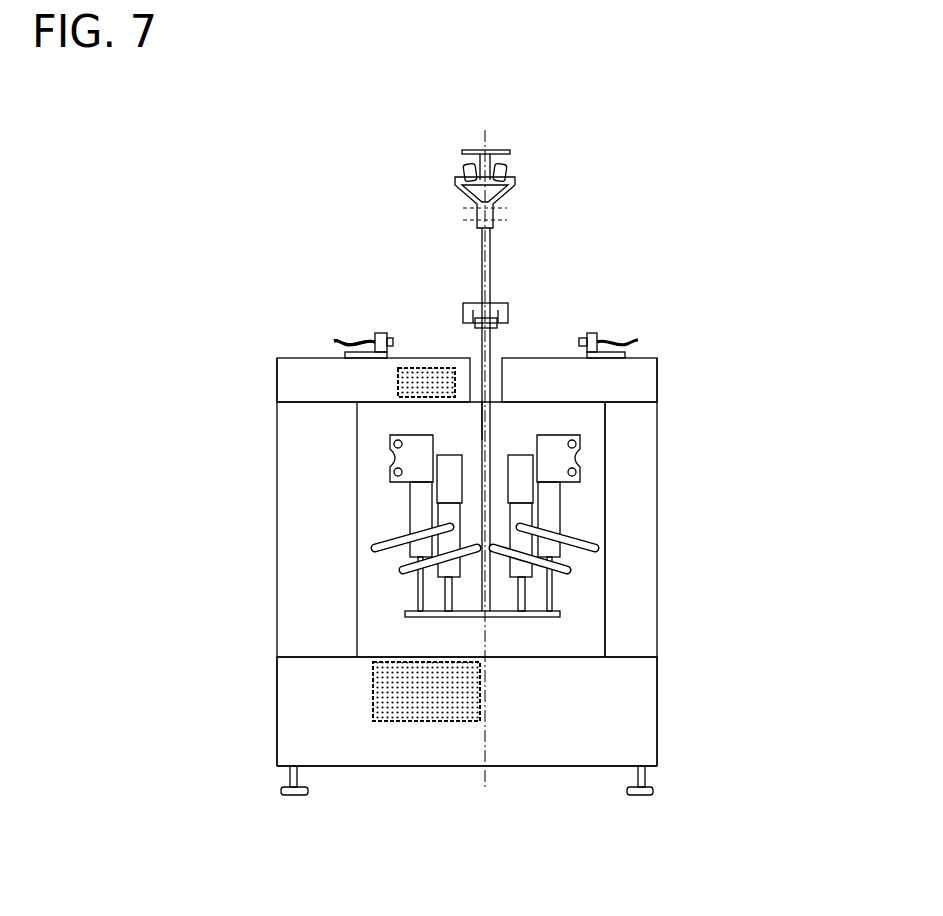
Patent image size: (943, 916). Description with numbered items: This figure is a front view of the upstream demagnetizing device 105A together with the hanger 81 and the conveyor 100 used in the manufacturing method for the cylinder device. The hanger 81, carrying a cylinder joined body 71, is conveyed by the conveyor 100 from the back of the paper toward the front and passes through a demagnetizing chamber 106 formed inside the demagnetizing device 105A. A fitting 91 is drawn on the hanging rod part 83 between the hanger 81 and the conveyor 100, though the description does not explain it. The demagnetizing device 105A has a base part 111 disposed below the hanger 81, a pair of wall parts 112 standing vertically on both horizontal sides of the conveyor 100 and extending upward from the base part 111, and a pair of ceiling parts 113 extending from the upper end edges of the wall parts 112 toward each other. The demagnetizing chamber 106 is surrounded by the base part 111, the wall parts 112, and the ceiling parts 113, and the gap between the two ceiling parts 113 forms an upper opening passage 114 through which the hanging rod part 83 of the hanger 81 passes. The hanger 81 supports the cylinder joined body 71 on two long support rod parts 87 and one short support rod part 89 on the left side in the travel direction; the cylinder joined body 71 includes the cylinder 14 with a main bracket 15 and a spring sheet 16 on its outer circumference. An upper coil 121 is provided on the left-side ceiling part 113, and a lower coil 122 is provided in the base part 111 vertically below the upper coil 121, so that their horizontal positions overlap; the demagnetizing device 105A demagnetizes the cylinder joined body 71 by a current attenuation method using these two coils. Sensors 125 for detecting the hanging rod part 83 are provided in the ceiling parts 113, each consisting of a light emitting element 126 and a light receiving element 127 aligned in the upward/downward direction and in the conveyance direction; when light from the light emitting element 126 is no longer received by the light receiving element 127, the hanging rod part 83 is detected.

The conveyor 100 is at (507, 152).
The demagnetizing device 105A is at (722, 247).
The ceiling parts 113 is at (433, 358).
The clamp 91 is at (480, 318).
The light receiving element 127 is at (380, 333).
The light emitting element 126 is at (592, 333).
The sensor 125 is at (356, 331).
The upper coil 121 is at (398, 383).
The lower coil 122 is at (373, 690).
The upper opening passage 114 is at (493, 386).
The demagnetizing chamber 106 is at (588, 431).
The hanging rod part 83 is at (480, 418).
The main bracket 15 is at (566, 456).
The cylinder joined body 71 is at (413, 501).
The cylinder 14 is at (556, 508).
The spring sheet 16 is at (584, 541).
The wall parts 112 is at (297, 567).
The long support rod parts 87 is at (417, 585).
The short support rod parts 89 is at (445, 600).
The hanger 81 is at (572, 614).
The base part 111 is at (638, 715).